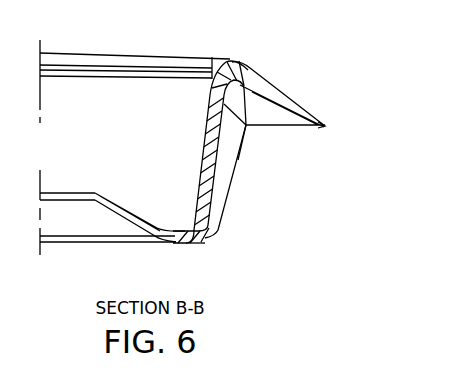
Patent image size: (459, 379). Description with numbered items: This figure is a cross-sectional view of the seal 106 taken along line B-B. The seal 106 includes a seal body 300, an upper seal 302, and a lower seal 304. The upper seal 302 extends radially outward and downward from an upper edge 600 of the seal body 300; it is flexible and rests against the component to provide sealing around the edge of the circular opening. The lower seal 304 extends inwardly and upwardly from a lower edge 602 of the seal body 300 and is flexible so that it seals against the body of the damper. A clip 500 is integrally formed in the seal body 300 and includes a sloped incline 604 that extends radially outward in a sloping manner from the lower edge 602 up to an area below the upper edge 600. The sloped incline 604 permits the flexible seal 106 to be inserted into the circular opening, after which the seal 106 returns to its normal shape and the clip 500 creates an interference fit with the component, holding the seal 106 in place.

The seal 106 is at (296, 76).
The seal body 300 is at (210, 163).
The upper seal 302 is at (322, 127).
The lower seal 304 is at (118, 218).
The clip 500 is at (241, 145).
The upper edge 600 is at (213, 57).
The lower edge 602 is at (218, 236).
The sloped incline 604 is at (233, 158).